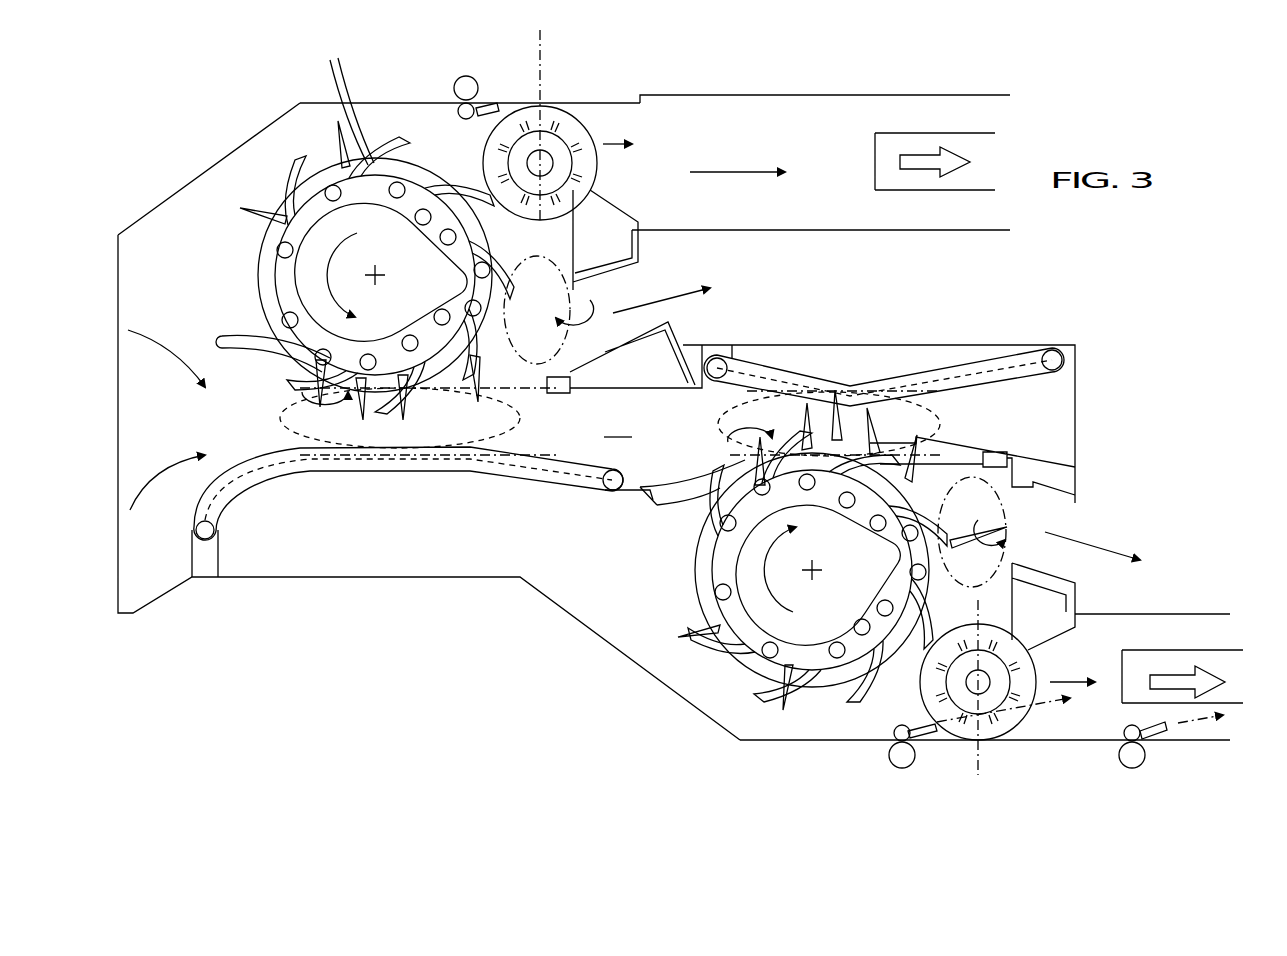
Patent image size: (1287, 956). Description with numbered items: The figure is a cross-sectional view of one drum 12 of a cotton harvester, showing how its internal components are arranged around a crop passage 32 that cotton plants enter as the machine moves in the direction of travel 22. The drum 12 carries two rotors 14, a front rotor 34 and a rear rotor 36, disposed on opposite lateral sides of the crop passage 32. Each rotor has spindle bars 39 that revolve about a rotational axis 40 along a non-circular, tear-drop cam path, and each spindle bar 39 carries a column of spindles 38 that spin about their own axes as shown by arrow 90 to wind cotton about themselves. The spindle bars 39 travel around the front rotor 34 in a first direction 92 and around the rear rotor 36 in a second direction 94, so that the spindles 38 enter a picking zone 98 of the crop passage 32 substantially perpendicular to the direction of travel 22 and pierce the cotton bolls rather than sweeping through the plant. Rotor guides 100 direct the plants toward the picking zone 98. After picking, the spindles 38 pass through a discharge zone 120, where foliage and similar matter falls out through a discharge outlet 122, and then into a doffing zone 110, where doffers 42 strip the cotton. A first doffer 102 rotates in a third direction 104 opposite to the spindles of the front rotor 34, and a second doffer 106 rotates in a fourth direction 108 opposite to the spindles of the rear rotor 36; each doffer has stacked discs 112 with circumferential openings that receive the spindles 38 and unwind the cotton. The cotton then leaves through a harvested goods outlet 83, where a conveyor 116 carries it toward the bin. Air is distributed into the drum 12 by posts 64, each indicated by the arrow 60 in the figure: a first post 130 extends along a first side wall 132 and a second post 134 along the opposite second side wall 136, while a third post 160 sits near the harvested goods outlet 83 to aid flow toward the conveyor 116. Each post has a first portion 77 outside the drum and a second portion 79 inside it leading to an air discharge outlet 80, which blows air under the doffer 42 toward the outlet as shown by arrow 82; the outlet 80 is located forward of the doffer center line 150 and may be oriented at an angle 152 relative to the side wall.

The drum 12 is at (707, 75).
The rotor 14 is at (539, 416).
The direction of travel 22 is at (627, 773).
The crop passage 32 is at (618, 424).
The front rotor 34 is at (295, 195).
The rear rotor 36 is at (765, 612).
The spindles 38 is at (338, 132).
The spindle bars 39 is at (532, 345).
The rotational axis 40 is at (382, 278).
The doffers 42 is at (803, 412).
The crop flow direction 60 is at (478, 52).
The posts 64 is at (756, 432).
The first portion 77 is at (475, 80).
The second portion 79 is at (460, 102).
The air discharge outlet 80 is at (490, 104).
The arrow 82 is at (607, 147).
The harvested goods outlet 83 is at (835, 95).
The arrow 90 is at (570, 310).
The first direction 92 is at (362, 238).
The second direction 94 is at (796, 550).
The picking zone 98 is at (292, 428).
The rotor guides 100 is at (240, 485).
The first doffer 102 is at (560, 122).
The third direction 104 is at (460, 138).
The second doffer 106 is at (1020, 700).
The fourth direction 108 is at (905, 712).
The doffing zone 110 is at (530, 252).
The stacked discs 112 is at (588, 152).
The conveyor 116 is at (930, 190).
The discharge zone 120 is at (575, 335).
The discharge outlet 122 is at (657, 273).
The first post 130 is at (460, 76).
The first side wall 132 is at (412, 102).
The second post 134 is at (895, 765).
The second side wall 136 is at (778, 741).
The center line 150 is at (542, 52).
The angle 152 is at (535, 112).
The third post 160 is at (1125, 768).